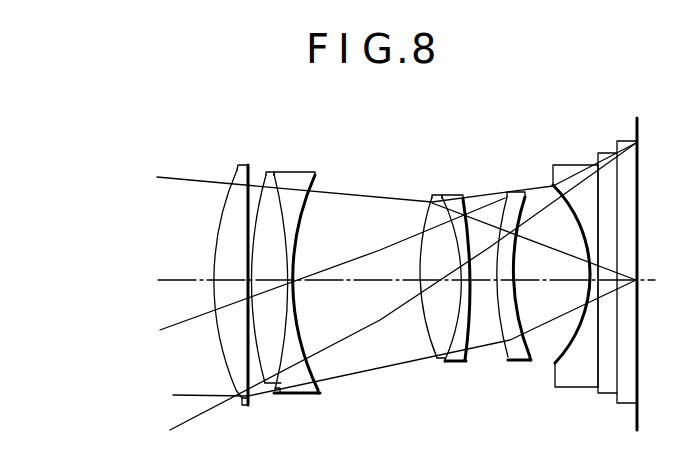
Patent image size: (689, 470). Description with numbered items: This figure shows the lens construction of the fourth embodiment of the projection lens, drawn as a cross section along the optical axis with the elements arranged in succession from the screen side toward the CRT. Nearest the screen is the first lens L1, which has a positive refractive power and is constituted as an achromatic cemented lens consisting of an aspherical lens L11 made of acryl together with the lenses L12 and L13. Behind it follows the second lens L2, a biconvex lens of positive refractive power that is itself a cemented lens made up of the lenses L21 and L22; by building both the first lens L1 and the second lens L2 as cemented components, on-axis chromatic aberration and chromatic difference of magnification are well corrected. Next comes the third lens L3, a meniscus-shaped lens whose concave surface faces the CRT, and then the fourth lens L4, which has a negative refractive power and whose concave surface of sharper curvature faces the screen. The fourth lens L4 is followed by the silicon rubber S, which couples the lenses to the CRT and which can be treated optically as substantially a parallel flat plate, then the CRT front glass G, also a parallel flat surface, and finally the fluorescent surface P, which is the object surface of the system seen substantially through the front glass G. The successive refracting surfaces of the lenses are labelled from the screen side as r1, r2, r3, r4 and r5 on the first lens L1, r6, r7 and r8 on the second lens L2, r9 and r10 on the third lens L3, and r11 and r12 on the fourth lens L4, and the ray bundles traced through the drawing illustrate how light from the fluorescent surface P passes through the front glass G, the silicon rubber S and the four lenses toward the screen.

The first lens L1 is at (318, 121).
The aspherical lens L11 is at (240, 168).
The lens L12 is at (268, 172).
The lens L13 is at (297, 175).
The second lens L2 is at (488, 156).
The lens L21 is at (435, 195).
The lens L22 is at (460, 194).
The third lens L3 is at (527, 190).
The fourth lens L4 is at (573, 170).
The silicon rubber S is at (607, 150).
The CRT front glass G is at (625, 140).
The fluorescent surface P is at (640, 148).
The first refracting surface r1 is at (235, 392).
The second refracting surface r2 is at (245, 405).
The third refracting surface r3 is at (263, 390).
The fourth refracting surface r4 is at (287, 362).
The fifth refracting surface r5 is at (320, 367).
The sixth refracting surface r6 is at (430, 343).
The seventh refracting surface r7 is at (449, 344).
The eighth refracting surface r8 is at (468, 344).
The ninth refracting surface r9 is at (506, 348).
The tenth refracting surface r10 is at (532, 353).
The eleventh refracting surface r11 is at (565, 363).
The twelfth refracting surface r12 is at (597, 370).